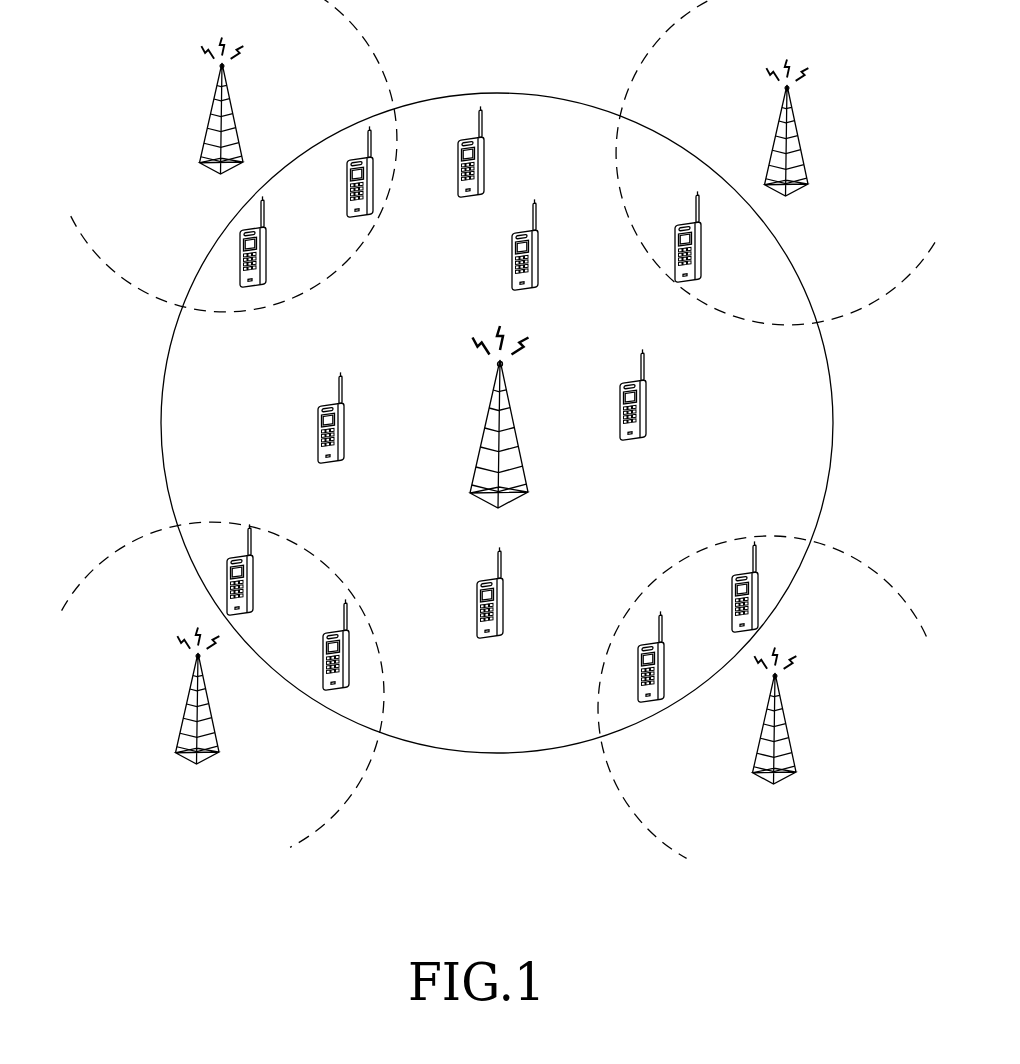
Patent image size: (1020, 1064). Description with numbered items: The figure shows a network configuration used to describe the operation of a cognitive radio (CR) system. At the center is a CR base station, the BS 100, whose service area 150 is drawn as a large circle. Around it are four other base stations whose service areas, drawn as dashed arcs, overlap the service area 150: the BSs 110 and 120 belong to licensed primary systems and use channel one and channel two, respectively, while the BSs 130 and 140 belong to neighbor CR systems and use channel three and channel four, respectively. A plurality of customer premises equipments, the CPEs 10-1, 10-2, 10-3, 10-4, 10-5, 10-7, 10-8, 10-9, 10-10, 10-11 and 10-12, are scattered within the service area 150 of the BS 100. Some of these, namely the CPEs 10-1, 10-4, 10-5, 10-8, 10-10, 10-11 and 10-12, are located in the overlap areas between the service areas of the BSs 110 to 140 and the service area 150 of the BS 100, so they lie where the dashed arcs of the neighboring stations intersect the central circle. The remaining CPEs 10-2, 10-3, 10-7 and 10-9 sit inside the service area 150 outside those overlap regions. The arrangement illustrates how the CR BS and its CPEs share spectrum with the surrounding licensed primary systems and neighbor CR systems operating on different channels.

The BS 100 is at (517, 431).
The BS in licensed primary system 110 is at (237, 117).
The BS in licensed primary system 120 is at (800, 134).
The BS in neighbor CR system 130 is at (210, 702).
The BS in neighbor CR system 140 is at (787, 721).
The service area 150 is at (505, 92).
The CPE 10-1 is at (375, 186).
The CPE 10-2 is at (485, 170).
The CPE 10-3 is at (540, 262).
The CPE 10-4 is at (702, 252).
The CPE 10-5 is at (268, 260).
The CPE 10-7 is at (648, 410).
The CPE 10-8 is at (253, 585).
The CPE 10-9 is at (503, 609).
The CPE 10-10 is at (349, 667).
The CPE 10-11 is at (639, 683).
The CPE 10-12 is at (732, 607).